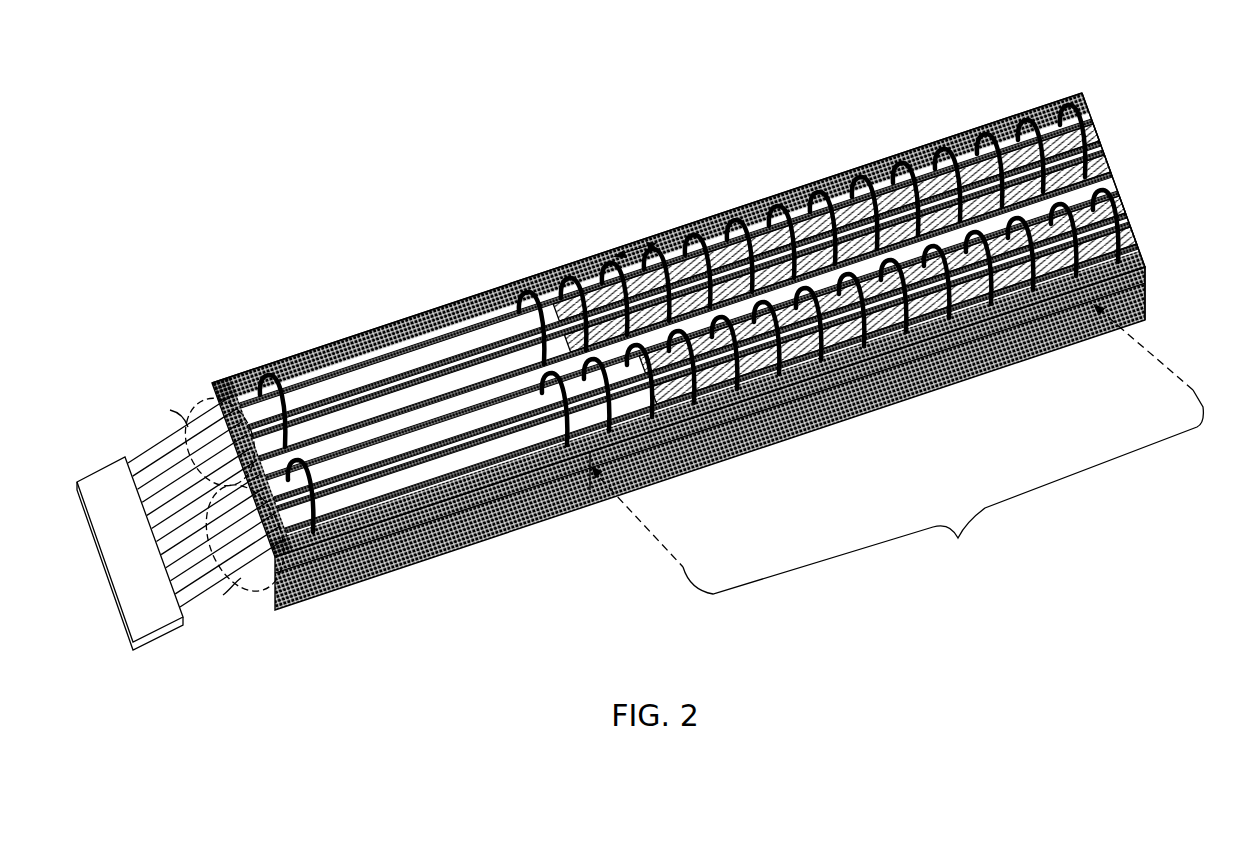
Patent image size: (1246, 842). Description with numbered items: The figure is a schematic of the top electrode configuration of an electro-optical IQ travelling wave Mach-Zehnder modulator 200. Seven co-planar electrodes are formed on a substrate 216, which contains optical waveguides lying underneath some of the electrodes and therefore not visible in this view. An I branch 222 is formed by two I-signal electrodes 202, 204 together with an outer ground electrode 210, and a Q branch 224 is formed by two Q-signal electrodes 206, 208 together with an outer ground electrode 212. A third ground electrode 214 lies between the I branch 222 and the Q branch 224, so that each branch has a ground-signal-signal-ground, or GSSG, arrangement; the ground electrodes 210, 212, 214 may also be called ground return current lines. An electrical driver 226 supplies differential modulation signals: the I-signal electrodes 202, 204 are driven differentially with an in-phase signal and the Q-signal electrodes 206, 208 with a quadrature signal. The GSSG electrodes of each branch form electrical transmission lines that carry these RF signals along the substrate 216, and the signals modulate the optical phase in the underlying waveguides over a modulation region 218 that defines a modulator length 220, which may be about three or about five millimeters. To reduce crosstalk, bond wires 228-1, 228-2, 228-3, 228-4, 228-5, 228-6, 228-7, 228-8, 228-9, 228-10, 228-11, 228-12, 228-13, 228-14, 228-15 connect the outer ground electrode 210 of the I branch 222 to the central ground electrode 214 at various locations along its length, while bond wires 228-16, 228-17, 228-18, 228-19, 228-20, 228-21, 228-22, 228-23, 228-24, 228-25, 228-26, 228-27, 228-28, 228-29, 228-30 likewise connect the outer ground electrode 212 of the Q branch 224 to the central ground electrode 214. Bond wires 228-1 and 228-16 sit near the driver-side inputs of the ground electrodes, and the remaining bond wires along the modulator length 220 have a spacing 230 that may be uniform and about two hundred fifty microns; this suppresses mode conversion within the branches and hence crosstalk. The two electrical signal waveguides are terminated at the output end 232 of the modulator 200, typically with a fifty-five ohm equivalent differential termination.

The modulator 200 is at (628, 340).
The I-signal electrode 202 is at (410, 335).
The I-signal electrode 204 is at (470, 362).
The Q-signal electrode 206 is at (478, 478).
The Q-signal electrode 208 is at (426, 497).
The outer ground electrode 210 is at (312, 384).
The outer ground electrode 212 is at (346, 527).
The third ground electrode 214 is at (532, 462).
The substrate 216 is at (414, 565).
The modulation region 218 is at (896, 449).
The modulator length 220 is at (1125, 320).
The I branch 222 is at (200, 404).
The Q branch 224 is at (242, 578).
The electrical driver 226 is at (103, 563).
The bond wire 228-1 is at (260, 389).
The bond wire 228-2 is at (519, 306).
The bond wire 228-3 is at (561, 292).
The bond wire 228-4 is at (602, 277).
The bond wire 228-5 is at (644, 263).
The bond wire 228-6 is at (685, 249).
The bond wire 228-7 is at (727, 234).
The bond wire 228-8 is at (769, 220).
The bond wire 228-9 is at (810, 206).
The bond wire 228-10 is at (852, 191).
The bond wire 228-11 is at (893, 177).
The bond wire 228-12 is at (935, 163).
The bond wire 228-13 is at (977, 148).
The bond wire 228-14 is at (1018, 134).
The bond wire 228-15 is at (1092, 140).
The bond wire 228-16 is at (313, 532).
The bond wire 228-17 is at (567, 443).
The bond wire 228-18 is at (609, 429).
The bond wire 228-19 is at (652, 415).
The bond wire 228-20 is at (694, 401).
The bond wire 228-21 is at (737, 387).
The bond wire 228-22 is at (779, 372).
The bond wire 228-23 is at (821, 358).
The bond wire 228-24 is at (864, 344).
The bond wire 228-25 is at (906, 330).
The bond wire 228-26 is at (949, 316).
The bond wire 228-27 is at (991, 302).
The bond wire 228-28 is at (1033, 288).
The bond wire 228-29 is at (1076, 274).
The bond wire 228-30 is at (1120, 252).
The bond wire spacing 230 is at (633, 244).
The output end 232 is at (1112, 180).